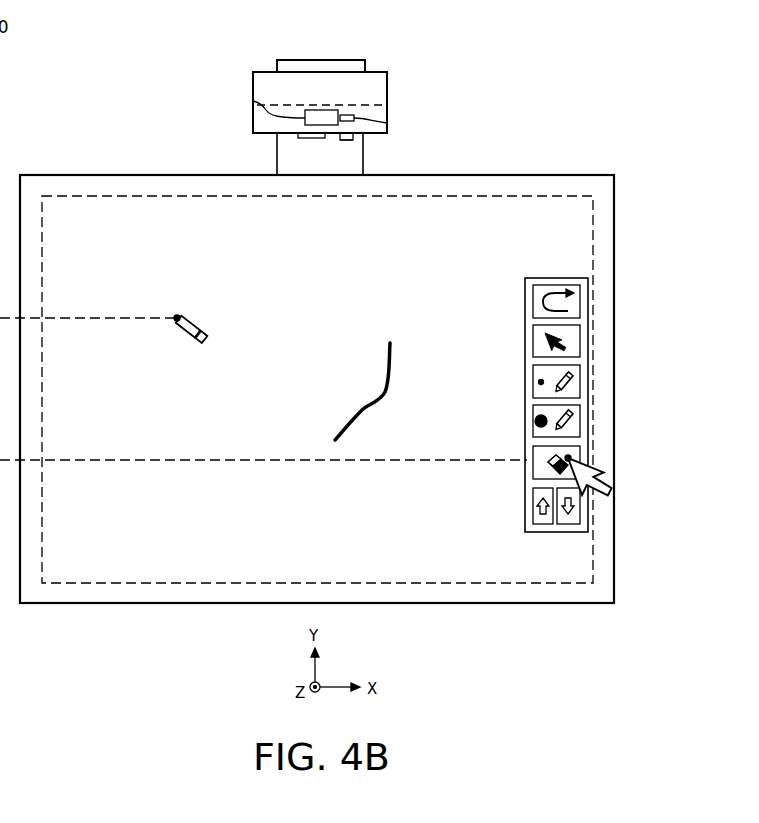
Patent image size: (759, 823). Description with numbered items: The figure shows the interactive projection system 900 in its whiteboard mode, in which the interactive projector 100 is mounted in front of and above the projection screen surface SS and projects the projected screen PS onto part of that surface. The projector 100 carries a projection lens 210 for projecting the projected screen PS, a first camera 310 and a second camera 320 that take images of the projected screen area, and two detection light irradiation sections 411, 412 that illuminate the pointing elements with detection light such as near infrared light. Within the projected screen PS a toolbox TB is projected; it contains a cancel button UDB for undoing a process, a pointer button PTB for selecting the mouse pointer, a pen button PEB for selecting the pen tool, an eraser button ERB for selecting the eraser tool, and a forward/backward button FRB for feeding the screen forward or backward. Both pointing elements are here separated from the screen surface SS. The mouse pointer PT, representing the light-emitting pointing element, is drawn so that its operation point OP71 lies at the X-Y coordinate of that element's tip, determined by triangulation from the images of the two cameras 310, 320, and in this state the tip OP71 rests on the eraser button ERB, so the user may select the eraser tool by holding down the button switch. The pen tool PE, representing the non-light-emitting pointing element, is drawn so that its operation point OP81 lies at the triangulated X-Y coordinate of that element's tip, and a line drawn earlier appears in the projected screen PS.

The interactive projector 100 is at (387, 88).
The projection lens 210 is at (253, 101).
The first camera 310 is at (387, 126).
The second camera 320 is at (363, 140).
The detection light irradiation section 411 is at (263, 147).
The detection light irradiation section 412 is at (297, 140).
The interactive projection system 900 is at (596, 88).
The projection screen surface SS is at (78, 181).
The projected screen PS is at (148, 196).
The pen tool PE is at (200, 330).
The operation point OP81 is at (177, 318).
The toolbox TB is at (538, 278).
The cancel button UDB is at (530, 300).
The pointer button PTB is at (530, 338).
The pen button PEB is at (530, 418).
The eraser button ERB is at (533, 461).
The forward/backward button FRB is at (543, 499).
The mouse pointer PT is at (608, 497).
The operation point OP71 is at (570, 458).